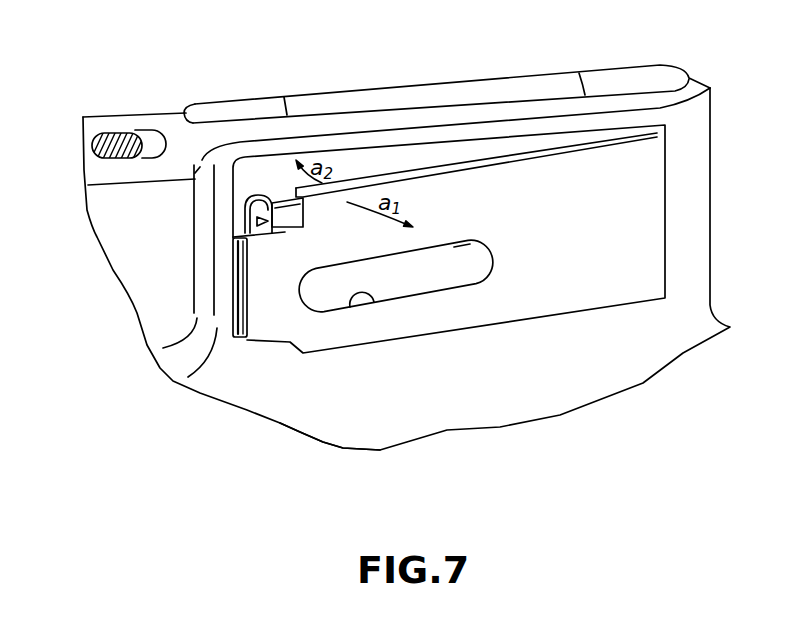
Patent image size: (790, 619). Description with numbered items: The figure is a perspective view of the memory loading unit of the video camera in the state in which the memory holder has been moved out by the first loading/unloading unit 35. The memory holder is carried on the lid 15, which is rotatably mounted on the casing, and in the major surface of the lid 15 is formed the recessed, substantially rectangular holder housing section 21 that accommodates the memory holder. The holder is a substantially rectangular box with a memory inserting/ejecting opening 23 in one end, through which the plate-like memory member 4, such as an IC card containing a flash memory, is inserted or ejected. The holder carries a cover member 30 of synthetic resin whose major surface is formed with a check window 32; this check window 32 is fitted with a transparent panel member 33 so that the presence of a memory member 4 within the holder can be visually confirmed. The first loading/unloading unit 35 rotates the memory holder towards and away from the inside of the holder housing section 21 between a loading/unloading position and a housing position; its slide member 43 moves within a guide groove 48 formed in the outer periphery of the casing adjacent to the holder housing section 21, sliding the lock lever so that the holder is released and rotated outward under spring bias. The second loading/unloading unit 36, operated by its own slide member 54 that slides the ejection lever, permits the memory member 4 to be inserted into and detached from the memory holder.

The memory member 4 is at (240, 284).
The lid 15 is at (299, 420).
The holder housing section 21 is at (240, 178).
The memory inserting/ejecting opening 23 is at (243, 337).
The cover member 30 is at (465, 275).
The check window 32 is at (375, 297).
The transparent panel member 33 is at (457, 255).
The first loading/unloading unit 35 is at (132, 129).
The second loading/unloading unit 36 is at (280, 236).
The slide member 43 is at (113, 133).
The guide groove 48 is at (155, 152).
The slide member 54 is at (250, 222).